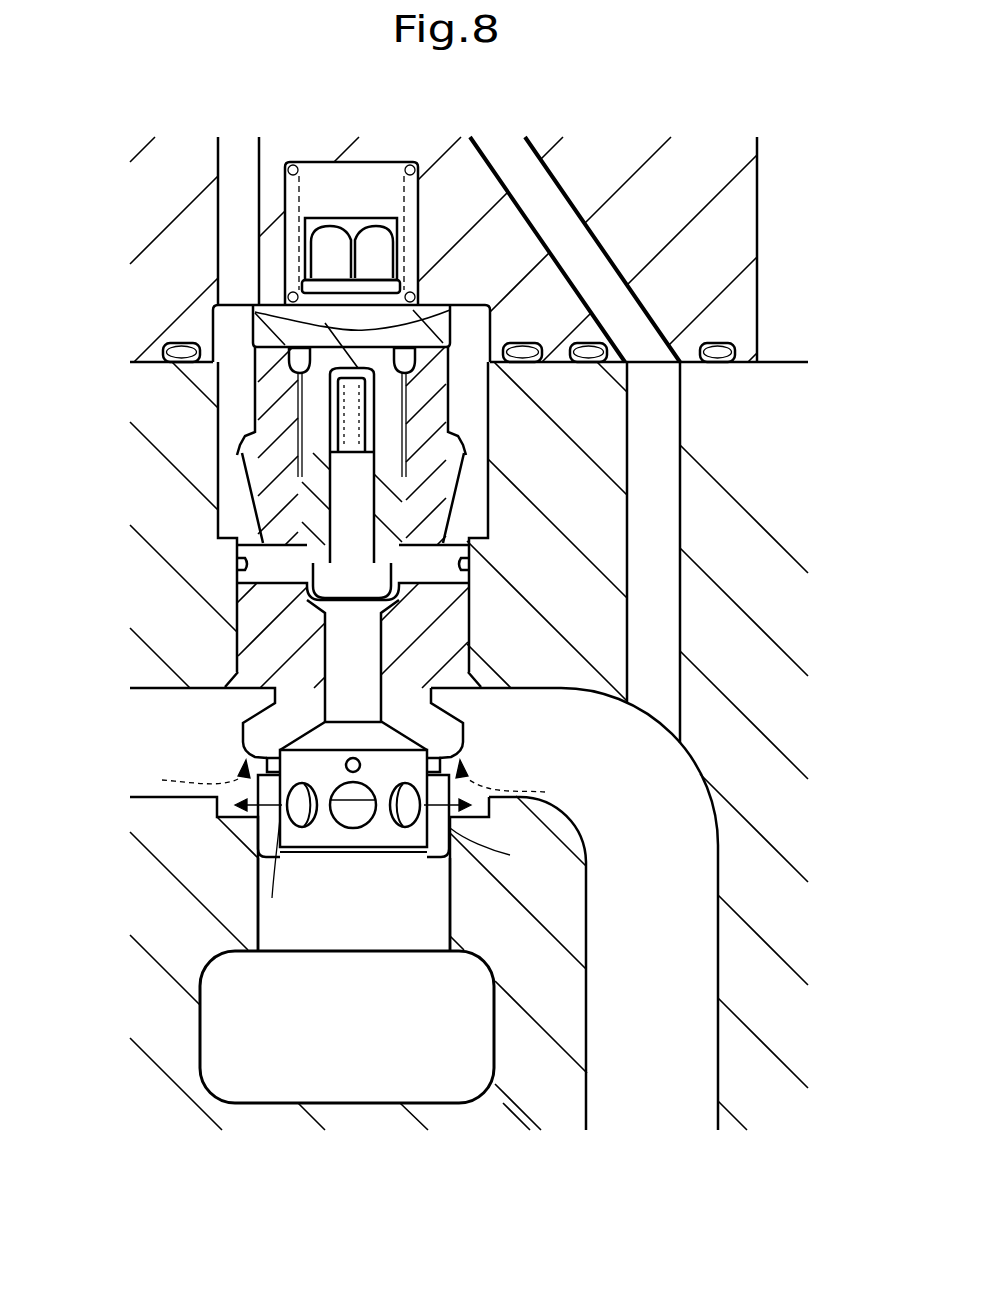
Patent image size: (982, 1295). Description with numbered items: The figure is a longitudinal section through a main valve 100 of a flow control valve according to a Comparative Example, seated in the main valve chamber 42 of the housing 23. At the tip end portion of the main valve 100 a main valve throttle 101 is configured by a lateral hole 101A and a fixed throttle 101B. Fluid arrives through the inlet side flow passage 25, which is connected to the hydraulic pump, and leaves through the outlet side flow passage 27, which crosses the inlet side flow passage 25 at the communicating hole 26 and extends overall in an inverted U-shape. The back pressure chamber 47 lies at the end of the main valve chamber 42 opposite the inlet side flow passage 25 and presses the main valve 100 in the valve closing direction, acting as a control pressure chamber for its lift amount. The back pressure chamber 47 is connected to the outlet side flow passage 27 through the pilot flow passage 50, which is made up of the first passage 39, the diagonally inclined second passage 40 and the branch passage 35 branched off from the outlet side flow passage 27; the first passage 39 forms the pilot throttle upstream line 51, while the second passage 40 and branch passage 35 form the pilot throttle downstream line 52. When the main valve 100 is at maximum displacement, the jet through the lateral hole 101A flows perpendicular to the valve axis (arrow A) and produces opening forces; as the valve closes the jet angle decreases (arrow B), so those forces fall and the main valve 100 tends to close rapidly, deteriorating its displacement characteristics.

The housing 23 is at (762, 897).
The inlet side flow passage 25 is at (205, 1055).
The communicating hole 26 is at (365, 895).
The outlet side flow passage 27 is at (495, 757).
The branch passage 35 is at (675, 628).
The first passage 39 is at (220, 162).
The second passage 40 is at (548, 187).
The main valve chamber 42 is at (472, 430).
The back pressure chamber 47 is at (468, 335).
The pilot flow passage 50 is at (237, 190).
The pilot throttle upstream line 51 is at (225, 222).
The pilot throttle downstream line 52 is at (587, 245).
The main valve 100 is at (268, 642).
The main valve throttle 101 is at (318, 816).
The lateral hole 101A is at (258, 830).
The fixed throttle 101B is at (346, 763).